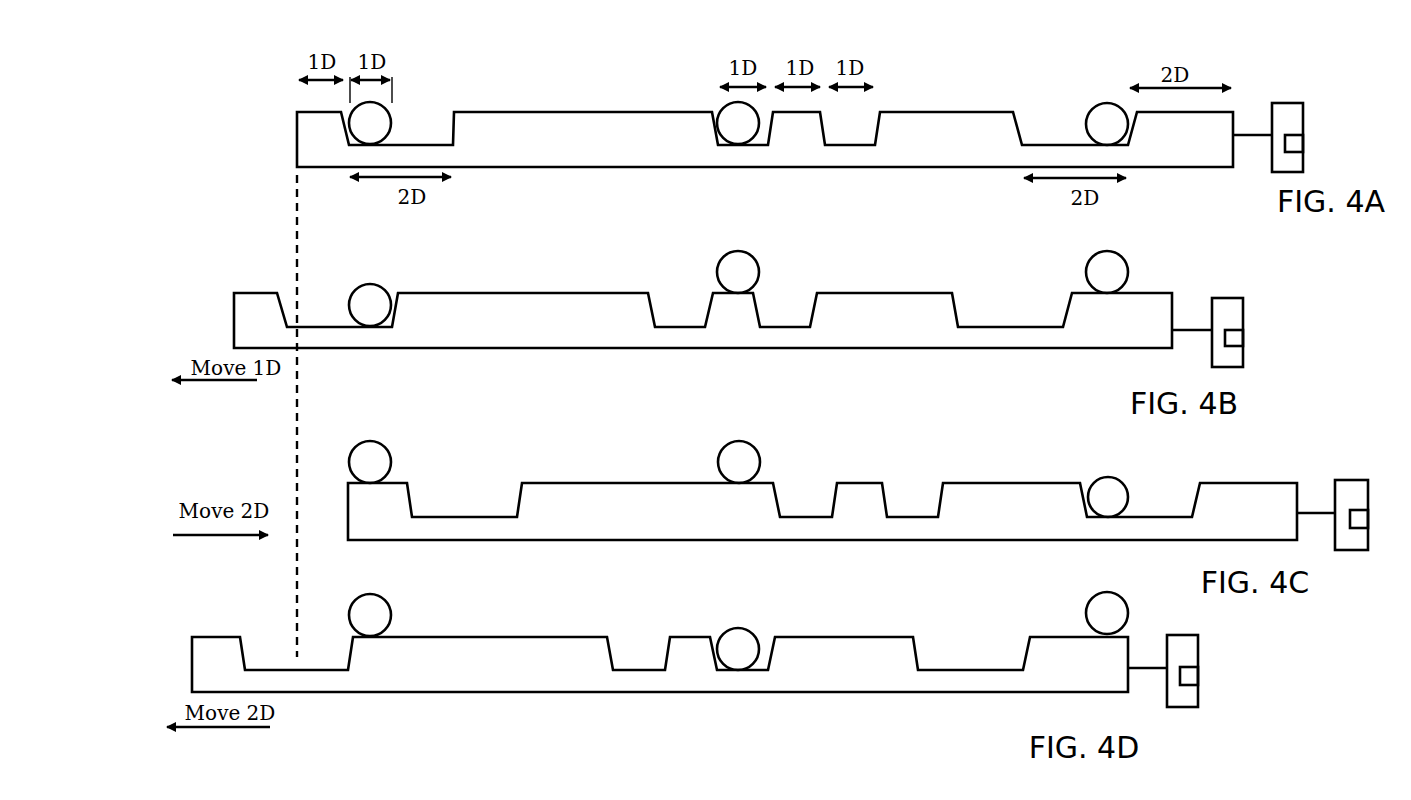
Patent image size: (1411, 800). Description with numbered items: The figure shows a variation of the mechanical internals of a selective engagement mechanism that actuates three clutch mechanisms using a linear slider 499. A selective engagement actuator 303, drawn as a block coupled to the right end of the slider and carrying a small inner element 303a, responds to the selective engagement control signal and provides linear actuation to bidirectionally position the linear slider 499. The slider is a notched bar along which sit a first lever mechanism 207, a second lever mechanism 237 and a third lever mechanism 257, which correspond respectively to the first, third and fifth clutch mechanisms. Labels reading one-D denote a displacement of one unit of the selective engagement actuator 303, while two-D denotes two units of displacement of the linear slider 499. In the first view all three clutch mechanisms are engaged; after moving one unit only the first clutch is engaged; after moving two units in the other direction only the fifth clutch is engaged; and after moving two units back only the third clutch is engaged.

In FIG. 4A, the first lever mechanism 207 is at (380, 122).
In FIG. 4B, the first lever mechanism 207 is at (383, 292).
In FIG. 4C, the first lever mechanism 207 is at (387, 459).
In FIG. 4D, the first lever mechanism 207 is at (387, 613).
In FIG. 4A, the second lever mechanism 237 is at (736, 122).
In FIG. 4B, the second lever mechanism 237 is at (727, 273).
In FIG. 4C, the second lever mechanism 237 is at (727, 450).
In FIG. 4D, the second lever mechanism 237 is at (730, 627).
In FIG. 4A, the third lever mechanism 257 is at (1100, 108).
In FIG. 4B, the third lever mechanism 257 is at (1090, 262).
In FIG. 4C, the third lever mechanism 257 is at (1108, 480).
In FIG. 4D, the third lever mechanism 257 is at (1090, 613).
In FIG. 4A, the selective engagement actuator 303 is at (1296, 107).
In FIG. 4B, the selective engagement actuator 303 is at (1238, 300).
In FIG. 4C, the selective engagement actuator 303 is at (1352, 485).
In FIG. 4D, the selective engagement actuator 303 is at (1192, 698).
In FIG. 4A, the sensor element 303a is at (1303, 138).
In FIG. 4B, the sensor element 303a is at (1240, 340).
In FIG. 4C, the sensor element 303a is at (1350, 528).
In FIG. 4D, the sensor element 303a is at (1190, 677).
In FIG. 4A, the linear slider 499 is at (617, 153).
In FIG. 4B, the linear slider 499 is at (578, 338).
In FIG. 4C, the linear slider 499 is at (608, 528).
In FIG. 4D, the linear slider 499 is at (493, 683).